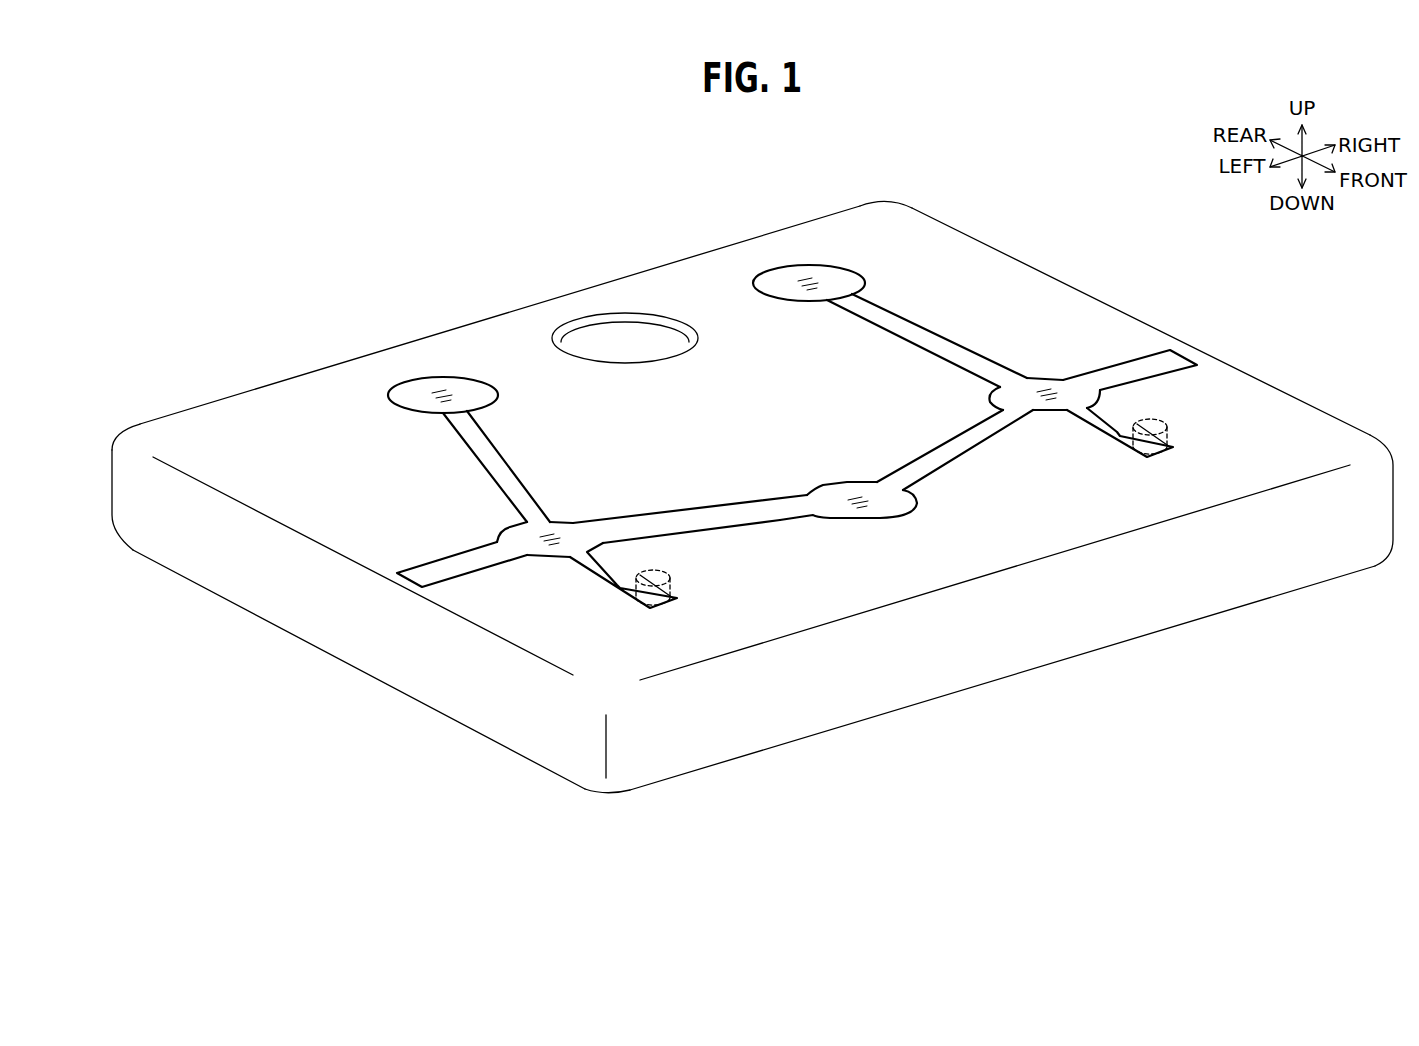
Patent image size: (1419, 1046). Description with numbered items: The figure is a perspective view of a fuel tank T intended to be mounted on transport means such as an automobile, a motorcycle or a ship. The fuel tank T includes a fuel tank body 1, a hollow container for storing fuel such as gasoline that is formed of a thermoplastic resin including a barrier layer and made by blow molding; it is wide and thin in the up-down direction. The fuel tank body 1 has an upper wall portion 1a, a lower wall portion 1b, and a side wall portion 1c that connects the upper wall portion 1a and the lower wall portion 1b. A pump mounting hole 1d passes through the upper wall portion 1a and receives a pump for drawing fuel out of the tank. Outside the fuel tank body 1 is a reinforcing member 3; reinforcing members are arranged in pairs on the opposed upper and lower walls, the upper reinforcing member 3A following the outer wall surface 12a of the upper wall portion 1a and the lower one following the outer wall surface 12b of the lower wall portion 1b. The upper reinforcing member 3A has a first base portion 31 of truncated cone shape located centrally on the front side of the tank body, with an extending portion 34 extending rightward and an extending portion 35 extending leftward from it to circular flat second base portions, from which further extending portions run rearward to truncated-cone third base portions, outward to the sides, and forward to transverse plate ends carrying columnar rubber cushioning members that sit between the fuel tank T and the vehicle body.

The fuel tank T is at (692, 215).
The fuel tank body 1 is at (937, 230).
The upper wall portion 1a is at (302, 425).
The lower wall portion 1b is at (777, 750).
The side wall portion 1c is at (425, 667).
The pump mounting hole 1d is at (625, 318).
The outer wall surface of the upper wall portion 12a is at (990, 270).
The outer wall surface of the lower wall portion 12b is at (1000, 680).
The reinforcing member 3 is at (808, 418).
The upper reinforcing member 3A is at (912, 318).
The first base portion 31 is at (841, 488).
The extending portion 34 is at (943, 453).
The extending portion 35 is at (693, 518).